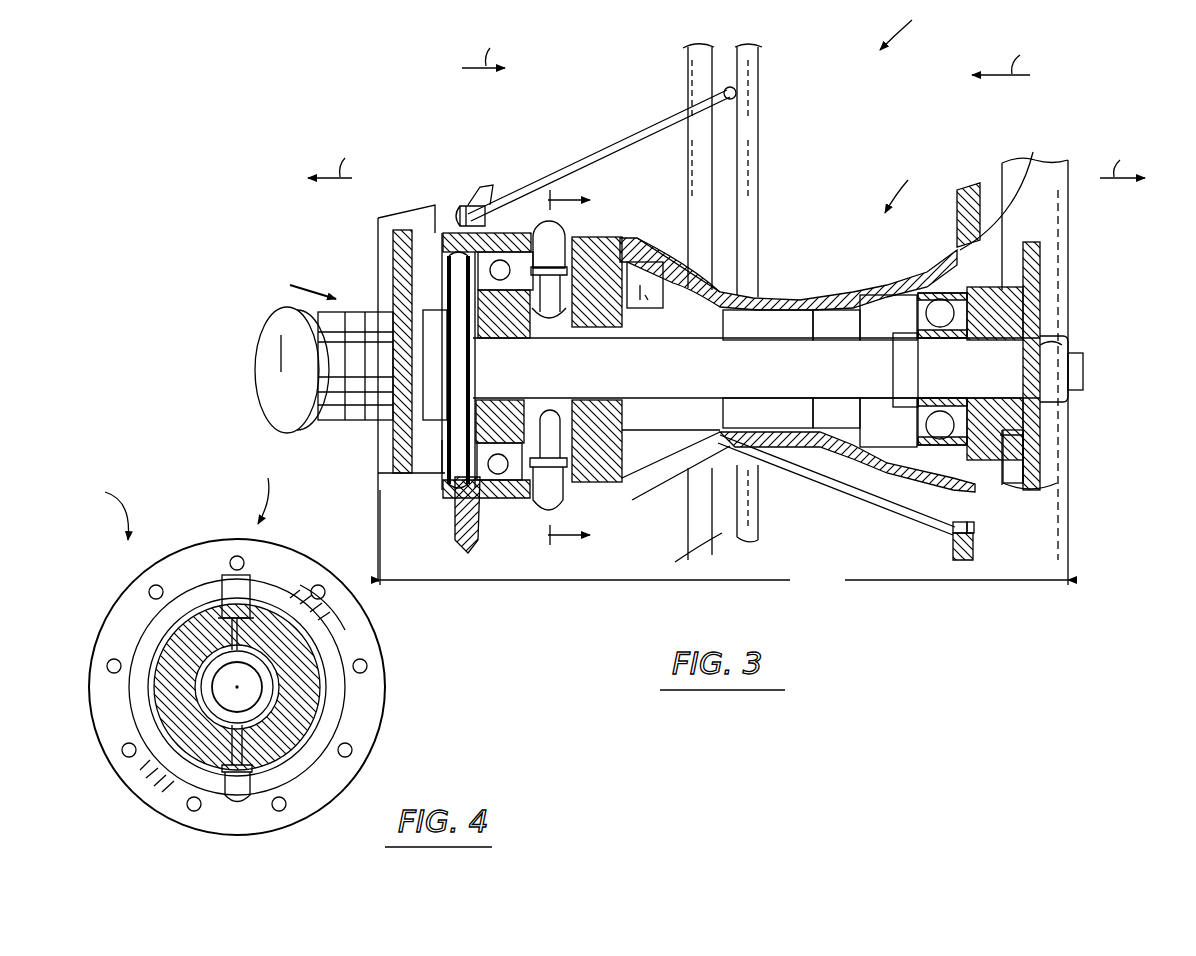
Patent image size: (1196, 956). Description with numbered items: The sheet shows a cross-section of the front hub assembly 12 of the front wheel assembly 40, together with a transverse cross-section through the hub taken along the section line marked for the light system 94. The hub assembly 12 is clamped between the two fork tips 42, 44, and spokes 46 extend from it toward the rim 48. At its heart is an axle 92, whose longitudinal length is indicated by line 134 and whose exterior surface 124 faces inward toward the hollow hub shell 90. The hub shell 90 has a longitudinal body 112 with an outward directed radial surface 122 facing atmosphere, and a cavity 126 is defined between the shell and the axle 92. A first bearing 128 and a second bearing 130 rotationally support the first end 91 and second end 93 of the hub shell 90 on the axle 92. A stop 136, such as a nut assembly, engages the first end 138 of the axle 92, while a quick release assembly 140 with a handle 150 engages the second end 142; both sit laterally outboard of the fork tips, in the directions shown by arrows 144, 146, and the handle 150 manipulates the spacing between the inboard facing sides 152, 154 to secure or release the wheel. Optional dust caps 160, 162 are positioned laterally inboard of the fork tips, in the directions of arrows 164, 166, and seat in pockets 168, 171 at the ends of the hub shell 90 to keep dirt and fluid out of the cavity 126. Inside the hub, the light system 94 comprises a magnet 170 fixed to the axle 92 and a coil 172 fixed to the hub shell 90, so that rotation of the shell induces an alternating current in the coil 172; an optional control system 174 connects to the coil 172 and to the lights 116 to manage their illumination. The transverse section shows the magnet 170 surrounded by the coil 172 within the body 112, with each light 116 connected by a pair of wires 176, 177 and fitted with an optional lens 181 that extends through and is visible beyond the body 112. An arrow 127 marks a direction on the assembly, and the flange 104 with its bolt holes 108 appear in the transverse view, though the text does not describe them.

In FIG. 4, the front hub assembly 12 is at (98, 510).
In FIG. 3, the front wheel assembly 40 is at (897, 26).
In FIG. 3, the fork tip 42 is at (400, 243).
In FIG. 3, the fork tip 44 is at (1032, 262).
In FIG. 3, the spokes 46 is at (662, 112).
In FIG. 3, the rim 48 is at (760, 68).
In FIG. 3, the hub shell 90 is at (793, 297).
In FIG. 4, the hub shell 90 is at (335, 602).
In FIG. 3, the first end 91 is at (448, 236).
In FIG. 3, the axle 92 is at (785, 381).
In FIG. 3, the second end 93 is at (1010, 205).
In FIG. 3, the light system 94 is at (612, 205).
In FIG. 4, the light system 94 is at (249, 493).
In FIG. 4, the flange 104 is at (378, 718).
In FIG. 4, the bolt hole 108 is at (352, 750).
In FIG. 3, the longitudinal body 112 is at (700, 478).
In FIG. 4, the longitudinal body 112 is at (262, 585).
In FIG. 3, the lights 116 is at (567, 240).
In FIG. 4, the lights 116 is at (226, 805).
In FIG. 3, the outward directed radial surface 122 is at (715, 277).
In FIG. 3, the exterior surface 124 is at (676, 405).
In FIG. 3, the cavity 126 is at (853, 307).
In FIG. 3, the direction arrow 127 is at (898, 184).
In FIG. 3, the first bearing 128 is at (498, 262).
In FIG. 3, the second bearing 130 is at (940, 298).
In FIG. 3, the longitudinal length 134 is at (724, 542).
In FIG. 3, the stop 136 is at (1060, 349).
In FIG. 3, the first end 138 is at (1086, 364).
In FIG. 3, the quick release assembly 140 is at (287, 281).
In FIG. 3, the second end 142 is at (383, 422).
In FIG. 3, the laterally outboard direction 144 is at (1126, 152).
In FIG. 3, the laterally outboard direction 146 is at (339, 153).
In FIG. 3, the handle 150 is at (268, 372).
In FIG. 3, the inboard facing side 152 is at (1045, 338).
In FIG. 3, the inboard facing side 154 is at (392, 325).
In FIG. 3, the dust cap 160 is at (1005, 437).
In FIG. 3, the dust cap 162 is at (428, 473).
In FIG. 3, the laterally inboard direction 164 is at (1008, 48).
In FIG. 3, the laterally inboard direction 166 is at (483, 42).
In FIG. 3, the pocket 168 is at (916, 505).
In FIG. 3, the magnet 170 is at (626, 327).
In FIG. 4, the magnet 170 is at (210, 710).
In FIG. 3, the pocket 171 is at (458, 497).
In FIG. 3, the coil 172 is at (605, 478).
In FIG. 4, the coil 172 is at (300, 694).
In FIG. 3, the control system 174 is at (780, 336).
In FIG. 4, the wire 176 is at (180, 632).
In FIG. 4, the wire 177 is at (247, 640).
In FIG. 4, the lens 181 is at (222, 580).